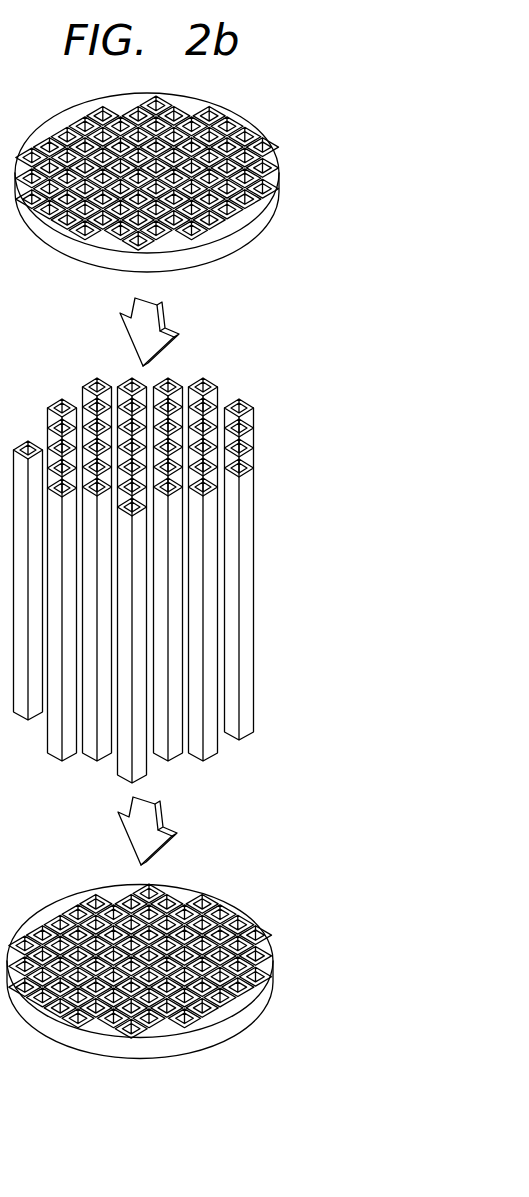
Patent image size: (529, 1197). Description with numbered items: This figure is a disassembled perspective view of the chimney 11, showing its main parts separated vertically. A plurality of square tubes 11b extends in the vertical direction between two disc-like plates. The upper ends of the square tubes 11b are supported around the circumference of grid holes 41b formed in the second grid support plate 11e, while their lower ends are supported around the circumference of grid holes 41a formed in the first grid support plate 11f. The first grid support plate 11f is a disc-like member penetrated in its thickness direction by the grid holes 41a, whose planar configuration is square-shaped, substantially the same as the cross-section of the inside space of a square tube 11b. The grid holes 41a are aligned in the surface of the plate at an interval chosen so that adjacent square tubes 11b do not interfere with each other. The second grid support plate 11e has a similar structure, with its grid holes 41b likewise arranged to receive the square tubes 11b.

The chimney 11 is at (272, 338).
The square tube 11b is at (253, 490).
The second grid support plate 11e is at (233, 111).
The first grid support plate 11f is at (273, 999).
The grid hole 41a is at (219, 998).
The grid hole 41b is at (212, 223).